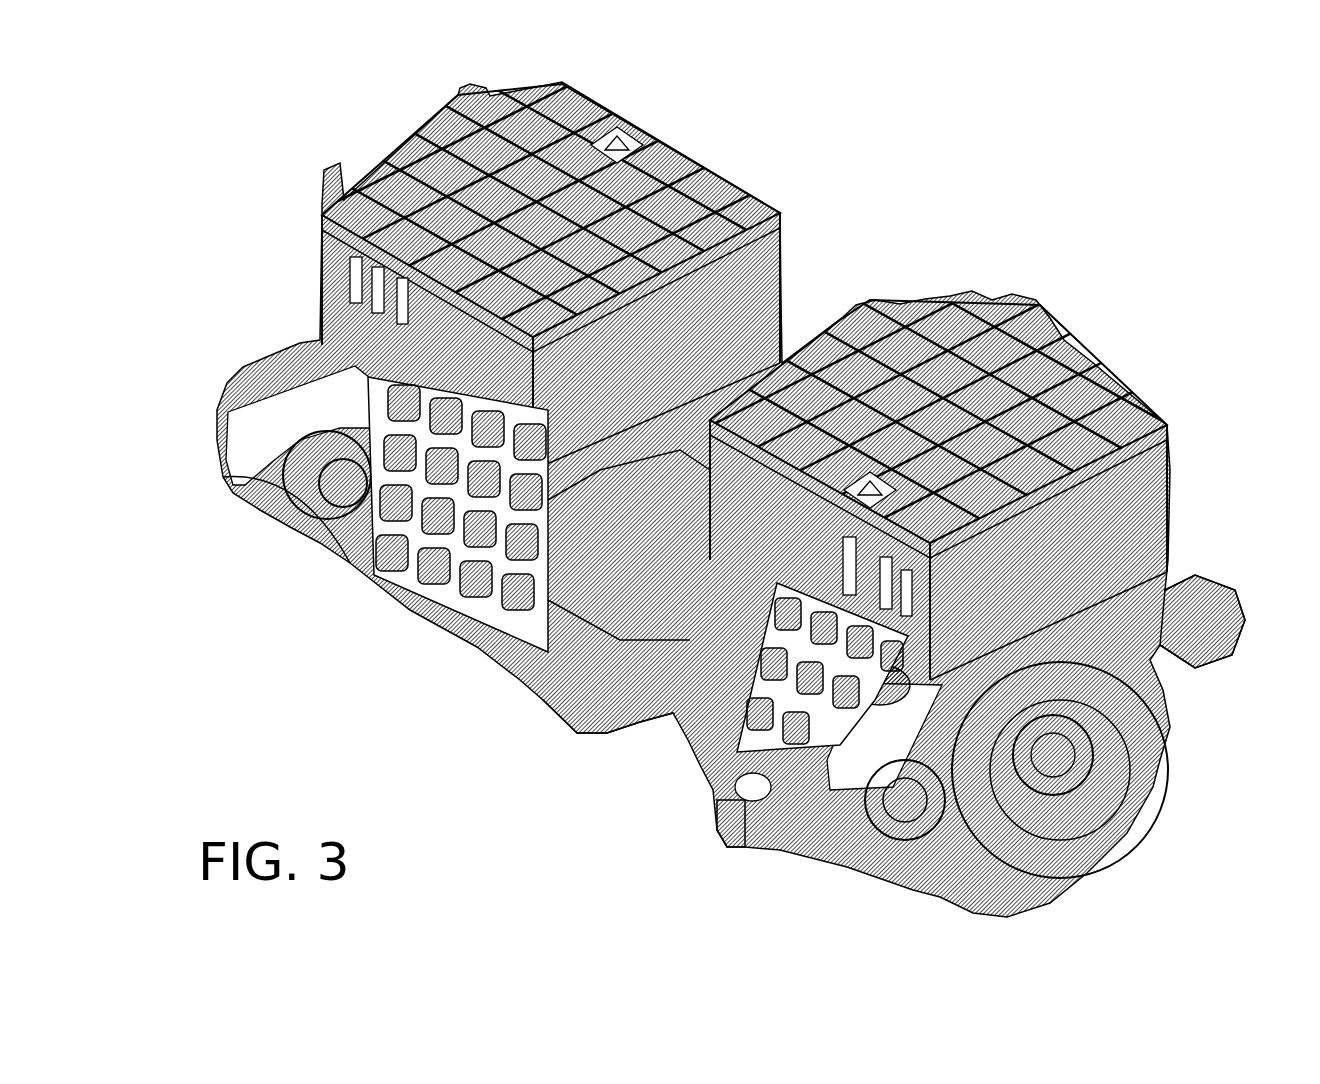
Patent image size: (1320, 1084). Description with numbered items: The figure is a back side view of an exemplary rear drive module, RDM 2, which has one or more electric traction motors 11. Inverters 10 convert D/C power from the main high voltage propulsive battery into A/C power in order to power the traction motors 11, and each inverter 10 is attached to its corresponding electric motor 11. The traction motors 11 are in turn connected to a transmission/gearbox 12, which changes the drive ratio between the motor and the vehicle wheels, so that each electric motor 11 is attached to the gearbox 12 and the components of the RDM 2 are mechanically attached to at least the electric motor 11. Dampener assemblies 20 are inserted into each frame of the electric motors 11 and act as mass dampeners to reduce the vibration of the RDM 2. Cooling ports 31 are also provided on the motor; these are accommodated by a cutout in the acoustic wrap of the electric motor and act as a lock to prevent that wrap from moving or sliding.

The rear drive module 2 is at (250, 137).
The inverter 10 is at (910, 300).
The dampener assembly 20 is at (253, 557).
The electric traction motor 11 is at (427, 617).
The transmission/gearbox 12 is at (553, 705).
The cooling port 31 is at (728, 848).